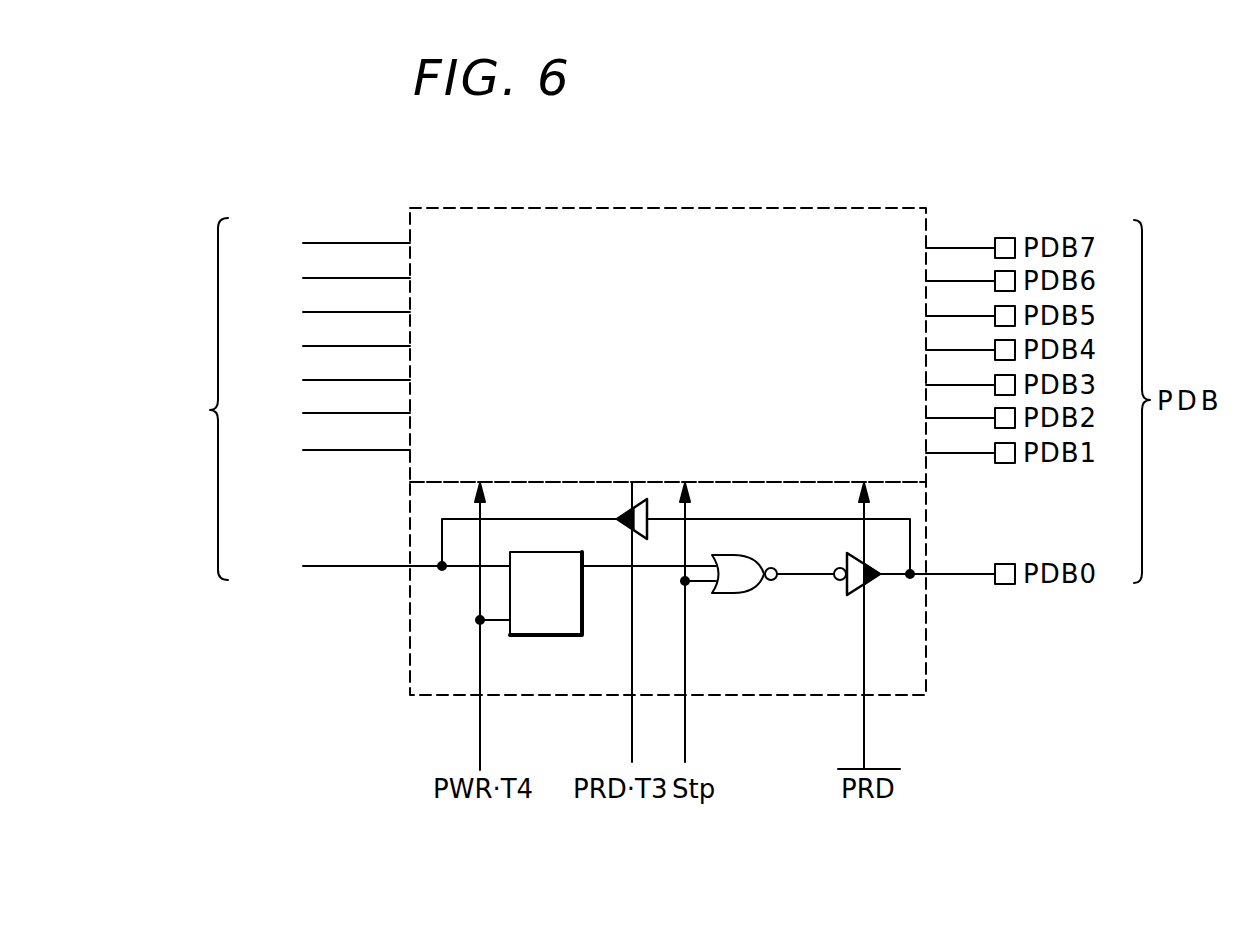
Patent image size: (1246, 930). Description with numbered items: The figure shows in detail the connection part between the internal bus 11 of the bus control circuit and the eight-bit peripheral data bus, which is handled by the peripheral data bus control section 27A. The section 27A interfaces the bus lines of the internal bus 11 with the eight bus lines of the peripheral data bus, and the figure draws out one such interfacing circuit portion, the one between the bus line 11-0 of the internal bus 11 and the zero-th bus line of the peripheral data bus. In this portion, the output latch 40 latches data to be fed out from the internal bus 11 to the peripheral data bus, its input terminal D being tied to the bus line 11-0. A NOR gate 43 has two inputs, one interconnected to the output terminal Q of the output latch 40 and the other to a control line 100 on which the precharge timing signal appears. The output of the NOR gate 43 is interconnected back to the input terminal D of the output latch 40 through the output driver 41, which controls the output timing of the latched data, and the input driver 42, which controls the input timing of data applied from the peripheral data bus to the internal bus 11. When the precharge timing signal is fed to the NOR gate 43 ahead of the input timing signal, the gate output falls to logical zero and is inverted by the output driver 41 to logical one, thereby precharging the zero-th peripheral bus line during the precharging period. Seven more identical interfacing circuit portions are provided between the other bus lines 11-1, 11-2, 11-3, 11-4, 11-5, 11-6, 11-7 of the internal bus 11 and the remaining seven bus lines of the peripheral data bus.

The peripheral data bus control section 27A is at (705, 207).
The internal bus 11 is at (200, 399).
The bus line 11-0 is at (371, 566).
The bus line 11-1 is at (321, 450).
The bus line 11-2 is at (321, 413).
The bus line 11-3 is at (321, 380).
The bus line 11-4 is at (321, 346).
The bus line 11-5 is at (321, 312).
The bus line 11-6 is at (321, 278).
The bus line 11-7 is at (321, 243).
The output latch 40 is at (563, 636).
The output driver 41 is at (856, 592).
The input driver 42 is at (622, 531).
The NOR gate 43 is at (747, 594).
The control line 100 is at (687, 714).